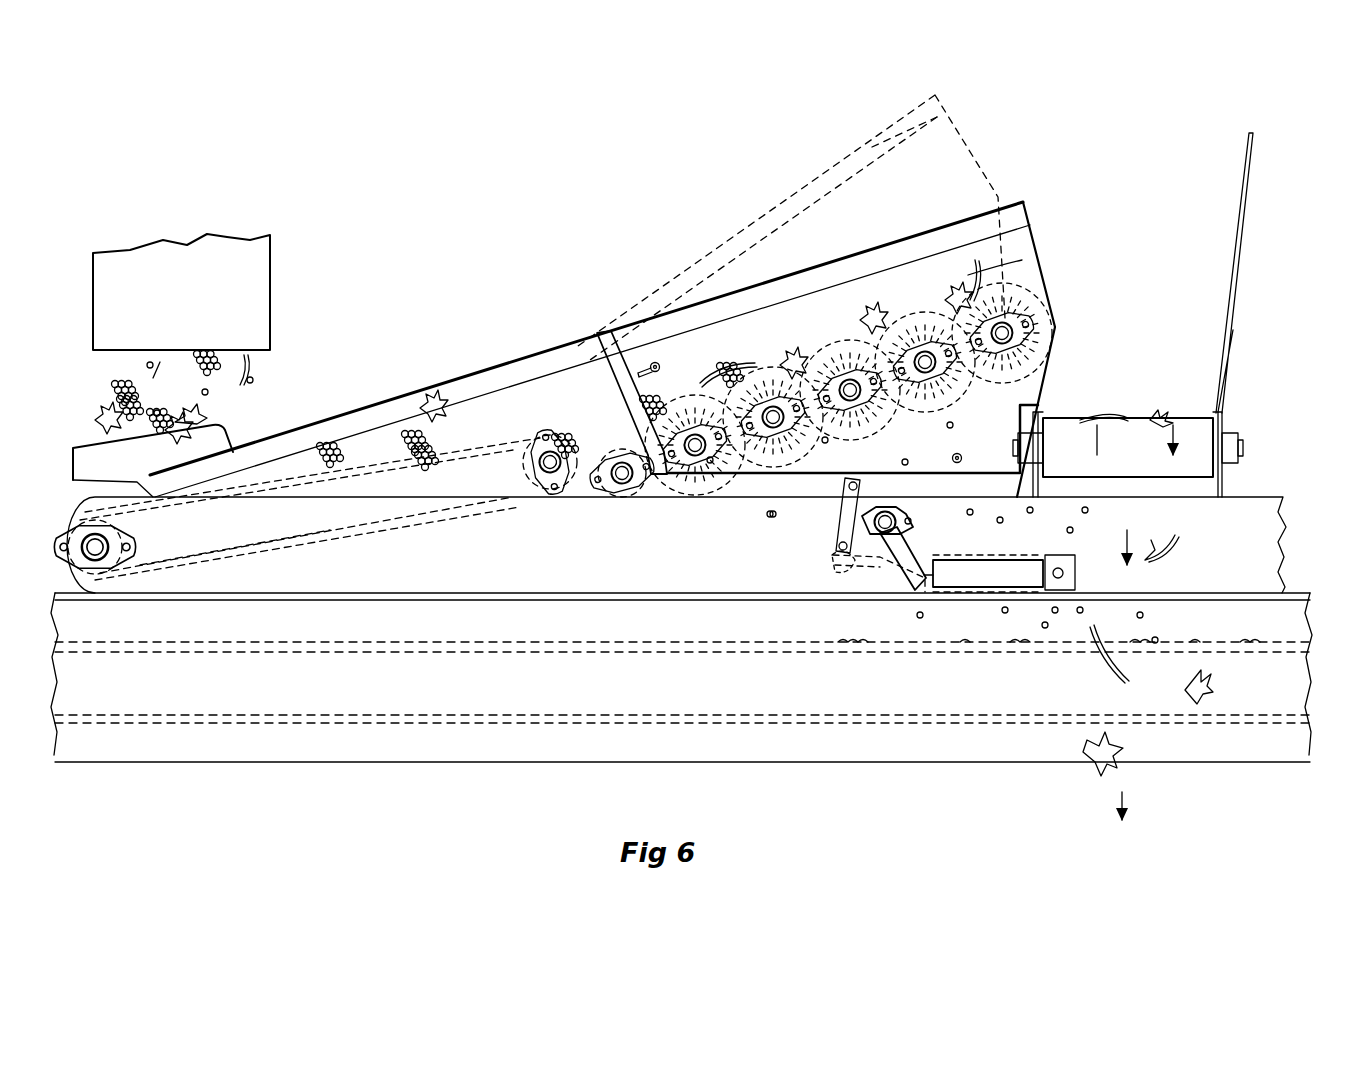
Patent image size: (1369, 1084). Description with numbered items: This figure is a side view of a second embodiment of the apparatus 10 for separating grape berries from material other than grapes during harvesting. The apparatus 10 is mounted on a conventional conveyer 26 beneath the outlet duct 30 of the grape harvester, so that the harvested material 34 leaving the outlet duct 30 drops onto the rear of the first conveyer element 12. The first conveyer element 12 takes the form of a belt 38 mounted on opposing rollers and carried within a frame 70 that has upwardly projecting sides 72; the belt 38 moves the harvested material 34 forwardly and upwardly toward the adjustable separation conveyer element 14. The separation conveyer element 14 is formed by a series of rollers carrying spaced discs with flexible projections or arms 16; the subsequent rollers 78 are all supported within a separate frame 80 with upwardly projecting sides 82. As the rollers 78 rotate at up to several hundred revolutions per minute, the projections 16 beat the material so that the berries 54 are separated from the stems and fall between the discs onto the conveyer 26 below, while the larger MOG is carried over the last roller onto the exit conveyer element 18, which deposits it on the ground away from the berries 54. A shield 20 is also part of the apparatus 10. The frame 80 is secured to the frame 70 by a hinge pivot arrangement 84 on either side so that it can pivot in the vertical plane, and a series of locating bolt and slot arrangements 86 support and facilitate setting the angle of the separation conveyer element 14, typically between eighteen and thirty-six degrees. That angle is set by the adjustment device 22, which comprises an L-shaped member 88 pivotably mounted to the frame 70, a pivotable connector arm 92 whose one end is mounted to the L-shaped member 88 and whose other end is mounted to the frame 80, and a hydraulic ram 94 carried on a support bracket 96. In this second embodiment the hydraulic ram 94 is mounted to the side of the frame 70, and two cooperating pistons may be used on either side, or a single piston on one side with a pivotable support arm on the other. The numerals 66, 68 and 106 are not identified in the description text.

The apparatus 10 is at (383, 228).
The first conveyer element 12 is at (415, 388).
The separation conveyer element 14 is at (762, 246).
The projections or arms 16 is at (962, 255).
The exit conveyer element 18 is at (1143, 463).
The shield 20 is at (1240, 262).
The adjustment device 22 is at (828, 572).
The conveyer 26 is at (455, 699).
The outlet duct 30 is at (197, 308).
The harvested material 34 is at (108, 390).
The belt 38 is at (318, 530).
The berries 54 is at (770, 517).
The hopper chute 66 is at (97, 455).
The drive coupling 68 is at (1243, 448).
The frame 70 is at (513, 564).
The upwardly projecting sides 72 is at (500, 372).
The subsequent rollers 78 is at (693, 430).
The frame 80 is at (833, 334).
The upwardly projecting sides 82 is at (872, 147).
The hinge pivot arrangement 84 is at (600, 373).
The locating bolt and slot arrangements 86 is at (646, 362).
The L-shaped member 88 is at (908, 560).
The pivotable connector arm 92 is at (847, 517).
The hydraulic ram 94 is at (980, 570).
The support bracket 96 is at (1080, 570).
The pivot bracket 106 is at (880, 562).